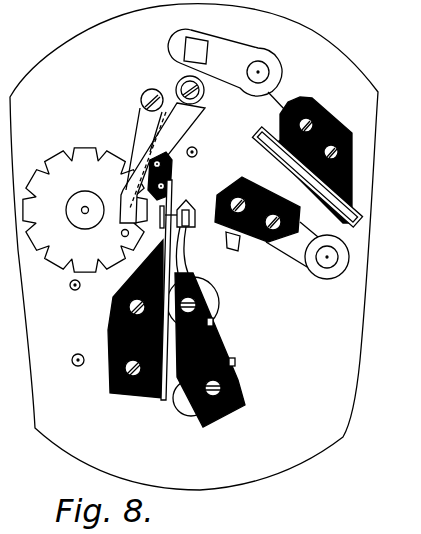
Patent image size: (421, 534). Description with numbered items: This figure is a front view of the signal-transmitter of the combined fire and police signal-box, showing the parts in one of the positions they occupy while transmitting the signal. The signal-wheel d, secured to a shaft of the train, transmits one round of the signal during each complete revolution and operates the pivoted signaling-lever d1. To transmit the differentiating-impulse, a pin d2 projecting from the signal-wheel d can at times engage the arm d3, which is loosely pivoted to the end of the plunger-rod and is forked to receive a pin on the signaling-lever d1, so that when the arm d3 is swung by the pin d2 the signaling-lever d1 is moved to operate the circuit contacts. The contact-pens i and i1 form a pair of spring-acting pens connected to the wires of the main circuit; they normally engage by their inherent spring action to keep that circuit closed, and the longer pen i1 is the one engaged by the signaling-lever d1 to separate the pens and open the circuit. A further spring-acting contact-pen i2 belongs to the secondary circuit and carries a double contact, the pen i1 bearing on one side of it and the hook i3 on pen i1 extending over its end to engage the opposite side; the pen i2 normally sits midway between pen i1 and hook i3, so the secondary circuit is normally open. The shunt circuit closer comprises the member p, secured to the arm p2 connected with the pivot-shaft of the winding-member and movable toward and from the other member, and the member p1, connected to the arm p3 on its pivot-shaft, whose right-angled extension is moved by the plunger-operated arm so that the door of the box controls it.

The signal-wheel d is at (68, 168).
The signaling-lever d1 is at (142, 112).
The pin d2 is at (121, 235).
The arm d3 is at (124, 172).
The contact-pen i is at (165, 232).
The contact-pen i1 is at (178, 196).
The contact-pen i2 is at (188, 272).
The hook i3 is at (196, 212).
The member of the shunt circuit closer p is at (273, 190).
The member of the shunt circuit closer p1 is at (268, 143).
The arm p2 is at (292, 248).
The arm p3 is at (296, 92).